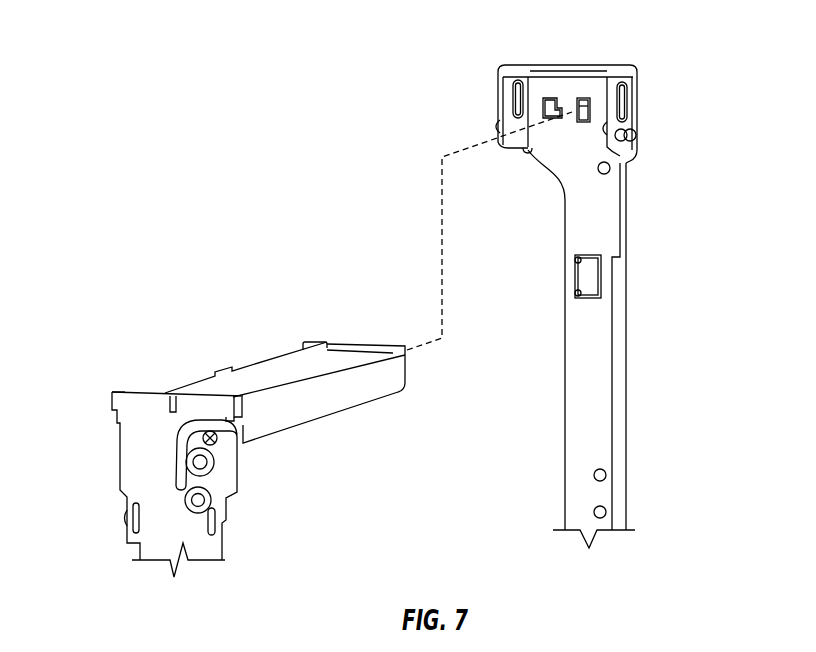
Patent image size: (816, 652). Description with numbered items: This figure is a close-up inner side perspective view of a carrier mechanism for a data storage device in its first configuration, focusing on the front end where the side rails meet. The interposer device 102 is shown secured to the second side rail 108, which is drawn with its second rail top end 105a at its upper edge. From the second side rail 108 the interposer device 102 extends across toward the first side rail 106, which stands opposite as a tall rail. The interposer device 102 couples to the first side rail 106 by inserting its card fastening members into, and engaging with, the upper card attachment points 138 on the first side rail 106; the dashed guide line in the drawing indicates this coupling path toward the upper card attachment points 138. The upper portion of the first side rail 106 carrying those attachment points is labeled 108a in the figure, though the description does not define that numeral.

The clip bracket 108a is at (640, 51).
The first side rail 106 is at (626, 220).
The upper card attachment points 138 is at (552, 132).
The interposer device 102 is at (252, 352).
The second rail top end 105a is at (116, 383).
The second side rail 108 is at (130, 463).